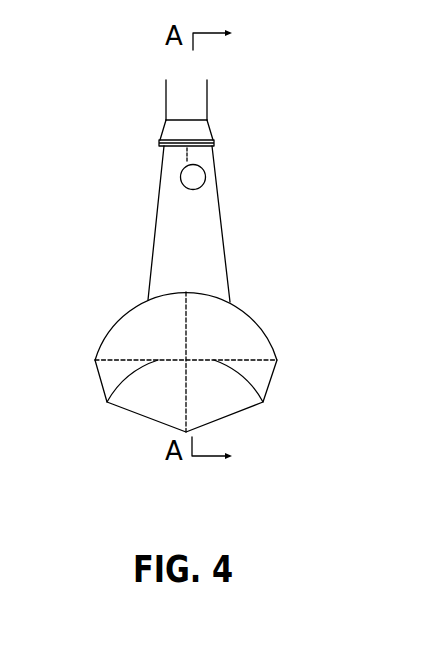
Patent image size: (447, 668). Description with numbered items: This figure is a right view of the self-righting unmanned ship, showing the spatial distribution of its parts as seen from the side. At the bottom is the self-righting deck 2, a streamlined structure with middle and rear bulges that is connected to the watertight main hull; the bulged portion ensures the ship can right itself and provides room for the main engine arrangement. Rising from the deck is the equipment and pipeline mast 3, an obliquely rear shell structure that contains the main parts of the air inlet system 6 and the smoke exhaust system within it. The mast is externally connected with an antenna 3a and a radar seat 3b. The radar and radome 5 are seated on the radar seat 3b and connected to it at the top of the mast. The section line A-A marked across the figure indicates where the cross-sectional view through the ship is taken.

The self-righting deck 2 is at (252, 317).
The equipment and pipeline mast 3 is at (144, 225).
The antenna 3a is at (166, 80).
The radar seat 3b is at (214, 145).
The radar and radome 5 is at (207, 120).
The air inlet system 6 is at (212, 174).